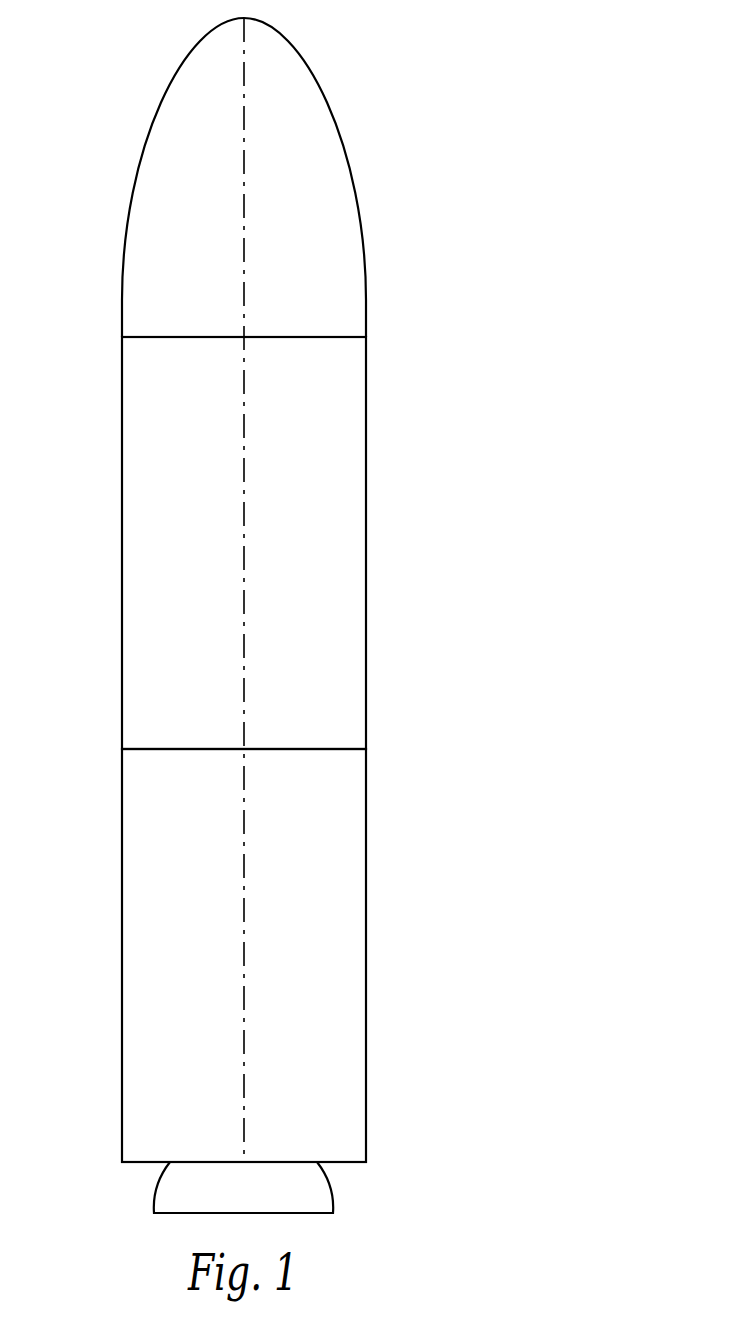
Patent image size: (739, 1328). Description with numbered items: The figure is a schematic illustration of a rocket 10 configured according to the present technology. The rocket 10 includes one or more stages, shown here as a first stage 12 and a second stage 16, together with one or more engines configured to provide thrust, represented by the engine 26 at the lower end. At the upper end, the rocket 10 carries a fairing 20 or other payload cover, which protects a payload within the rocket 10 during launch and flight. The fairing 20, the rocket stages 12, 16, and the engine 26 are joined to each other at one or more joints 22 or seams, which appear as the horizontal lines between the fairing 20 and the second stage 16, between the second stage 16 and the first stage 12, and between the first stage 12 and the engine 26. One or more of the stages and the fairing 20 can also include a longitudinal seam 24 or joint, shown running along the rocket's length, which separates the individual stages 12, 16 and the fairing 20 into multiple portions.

The rocket 10 is at (540, 114).
The first stage 12 is at (347, 918).
The second stage 16 is at (338, 483).
The fairing 20 is at (330, 257).
The joint 22 is at (163, 336).
The longitudinal seam 24 is at (244, 133).
The engine 26 is at (325, 1205).